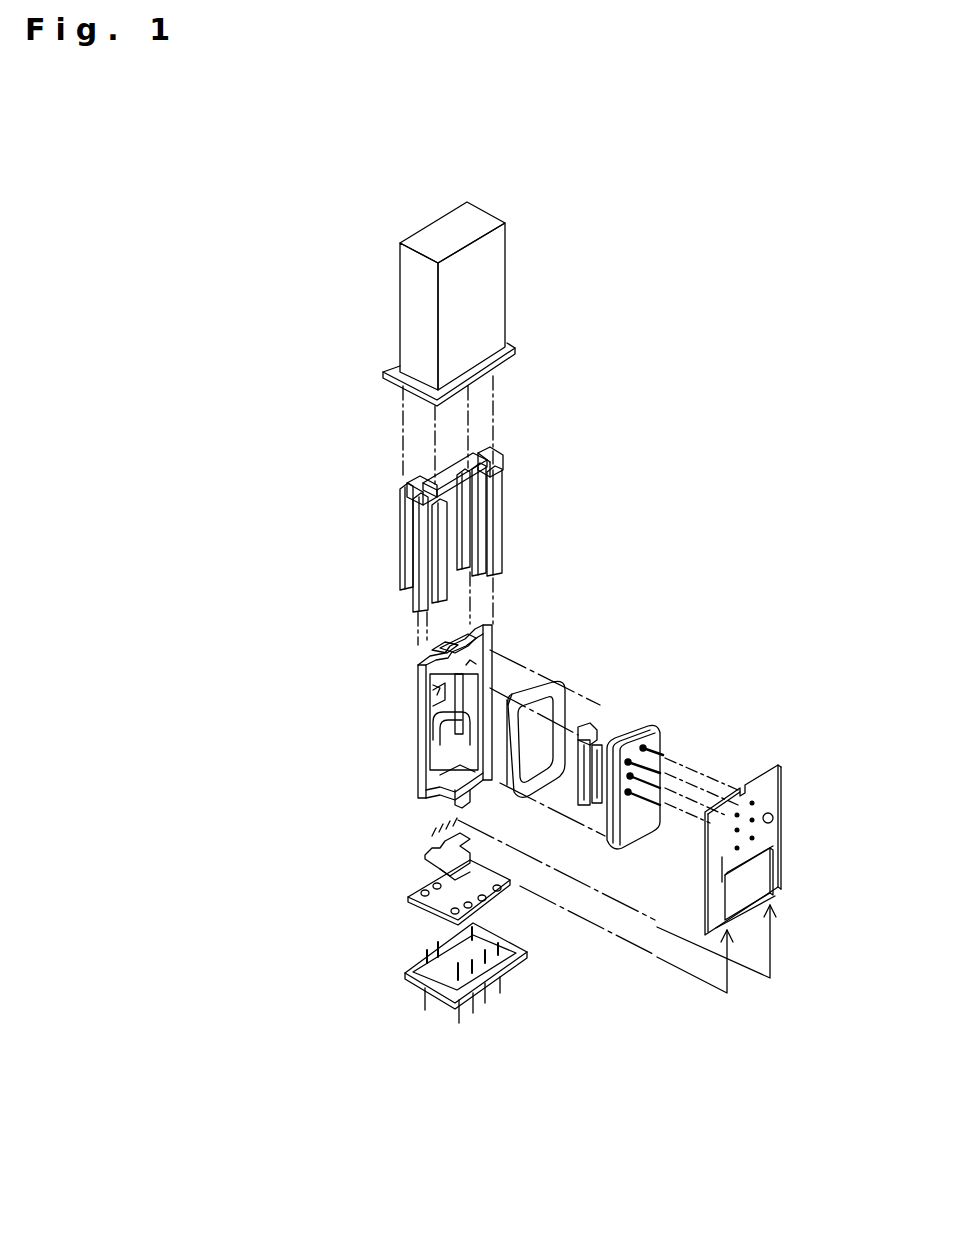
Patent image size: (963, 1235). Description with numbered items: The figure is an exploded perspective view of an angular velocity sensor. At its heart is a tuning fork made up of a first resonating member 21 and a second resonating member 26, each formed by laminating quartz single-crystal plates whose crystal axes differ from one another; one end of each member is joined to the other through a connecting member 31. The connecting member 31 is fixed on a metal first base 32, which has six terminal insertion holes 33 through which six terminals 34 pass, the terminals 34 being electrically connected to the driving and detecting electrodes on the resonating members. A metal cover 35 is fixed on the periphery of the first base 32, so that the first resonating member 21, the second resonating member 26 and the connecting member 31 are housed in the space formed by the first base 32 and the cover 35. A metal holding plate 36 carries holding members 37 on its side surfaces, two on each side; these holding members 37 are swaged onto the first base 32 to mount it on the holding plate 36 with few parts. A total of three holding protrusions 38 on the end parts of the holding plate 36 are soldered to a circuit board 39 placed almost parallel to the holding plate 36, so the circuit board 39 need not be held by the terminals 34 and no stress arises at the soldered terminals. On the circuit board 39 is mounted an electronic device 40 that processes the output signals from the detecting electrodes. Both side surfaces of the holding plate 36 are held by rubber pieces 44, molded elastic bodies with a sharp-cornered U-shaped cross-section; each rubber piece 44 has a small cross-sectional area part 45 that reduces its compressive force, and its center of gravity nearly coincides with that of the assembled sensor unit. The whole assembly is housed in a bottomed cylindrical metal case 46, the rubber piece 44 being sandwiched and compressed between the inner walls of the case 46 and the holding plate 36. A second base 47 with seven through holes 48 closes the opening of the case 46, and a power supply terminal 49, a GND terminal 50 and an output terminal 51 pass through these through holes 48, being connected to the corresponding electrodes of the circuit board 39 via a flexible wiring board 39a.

The first resonating member 21 is at (584, 806).
The second resonating member 26 is at (597, 805).
The connecting member 31 is at (593, 727).
The first base 32 is at (655, 735).
The terminal insertion holes 33 is at (645, 730).
The terminals 34 is at (663, 753).
The cover 35 is at (530, 690).
The holding plate 36 is at (493, 652).
The holding member 37 is at (467, 665).
The holding protrusions 38 is at (445, 645).
The circuit board 39 is at (773, 783).
The flexible wiring board 39a is at (417, 910).
The electronic device 40 is at (753, 882).
The rubber piece 44 is at (497, 532).
The small cross-sectional area part 45 is at (490, 472).
The case 46 is at (452, 303).
The second base 47 is at (410, 977).
The through holes 48 is at (442, 1002).
The power supply terminal 49 is at (459, 1020).
The GND terminal 50 is at (430, 947).
The output terminal 51 is at (500, 995).